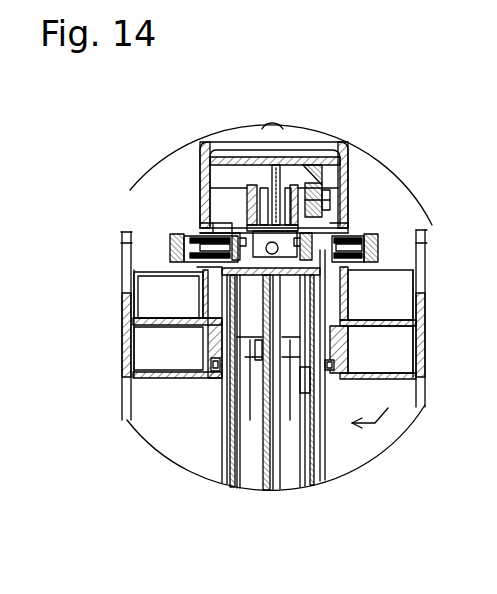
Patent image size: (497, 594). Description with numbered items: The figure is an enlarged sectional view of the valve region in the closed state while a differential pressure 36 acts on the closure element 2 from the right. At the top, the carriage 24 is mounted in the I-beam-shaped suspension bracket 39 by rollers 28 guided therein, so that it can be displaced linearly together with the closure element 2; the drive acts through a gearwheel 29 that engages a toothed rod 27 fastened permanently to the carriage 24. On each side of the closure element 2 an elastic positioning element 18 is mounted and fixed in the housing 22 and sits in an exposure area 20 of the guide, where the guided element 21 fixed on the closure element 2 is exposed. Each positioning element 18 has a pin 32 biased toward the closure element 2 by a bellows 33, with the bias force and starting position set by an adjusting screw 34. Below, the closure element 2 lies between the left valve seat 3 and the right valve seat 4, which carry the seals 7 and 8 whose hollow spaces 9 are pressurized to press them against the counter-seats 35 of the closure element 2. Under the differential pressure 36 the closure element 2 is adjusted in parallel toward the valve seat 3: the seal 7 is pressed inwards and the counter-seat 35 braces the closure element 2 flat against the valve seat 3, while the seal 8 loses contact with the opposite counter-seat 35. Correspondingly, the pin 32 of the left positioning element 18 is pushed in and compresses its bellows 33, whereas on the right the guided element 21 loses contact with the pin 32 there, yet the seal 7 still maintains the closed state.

The closure element 2 is at (247, 440).
The valve seat 3 is at (222, 347).
The valve seat 4 is at (325, 342).
The seal 7 is at (220, 372).
The seal 8 is at (330, 368).
The hollow space 9 is at (213, 360).
The positioning element 18 is at (178, 230).
The exposure area 20 is at (222, 232).
The guided element 21 is at (228, 258).
The housing 22 is at (422, 375).
The carriage 24 is at (295, 190).
The toothed rod 27 is at (305, 170).
The roller 28 is at (277, 237).
The gearwheel 29 is at (313, 237).
The pin 32 is at (182, 229).
The bellows 33 is at (207, 259).
The adjusting screw 34 is at (172, 247).
The counter-seat 35 is at (245, 352).
The differential pressure 36 is at (380, 404).
The suspension bracket 39 is at (270, 168).